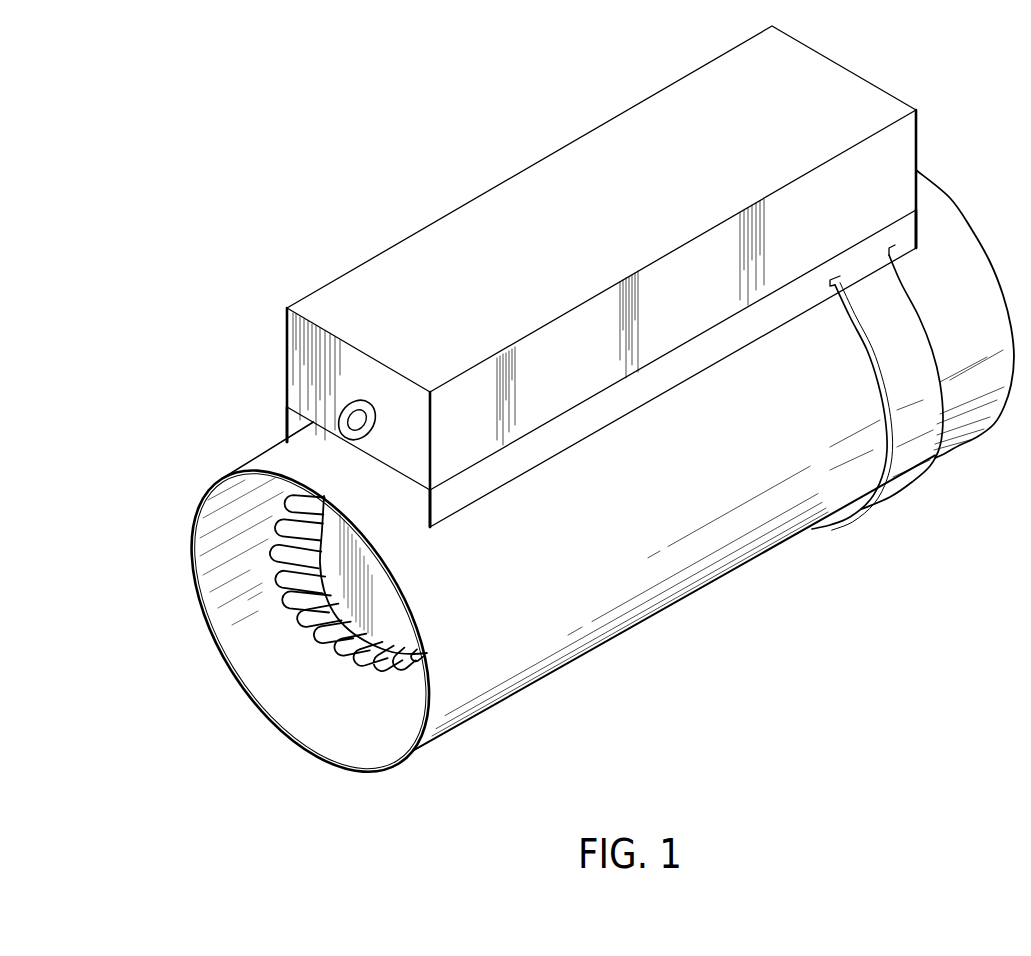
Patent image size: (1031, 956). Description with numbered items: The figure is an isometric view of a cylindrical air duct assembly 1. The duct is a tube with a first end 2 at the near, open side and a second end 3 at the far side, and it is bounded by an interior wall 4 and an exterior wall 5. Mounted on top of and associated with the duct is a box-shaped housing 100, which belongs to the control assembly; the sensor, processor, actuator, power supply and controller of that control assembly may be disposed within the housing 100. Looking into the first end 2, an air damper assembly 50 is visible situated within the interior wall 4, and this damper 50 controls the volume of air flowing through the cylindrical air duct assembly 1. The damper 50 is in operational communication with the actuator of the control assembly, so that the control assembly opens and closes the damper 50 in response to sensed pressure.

The air duct assembly 1 is at (178, 386).
The housing 100 is at (318, 378).
The exterior wall 5 is at (280, 458).
The first end 2 is at (345, 800).
The second end 3 is at (962, 419).
The interior wall 4 is at (263, 668).
The air damper assembly 50 is at (283, 585).